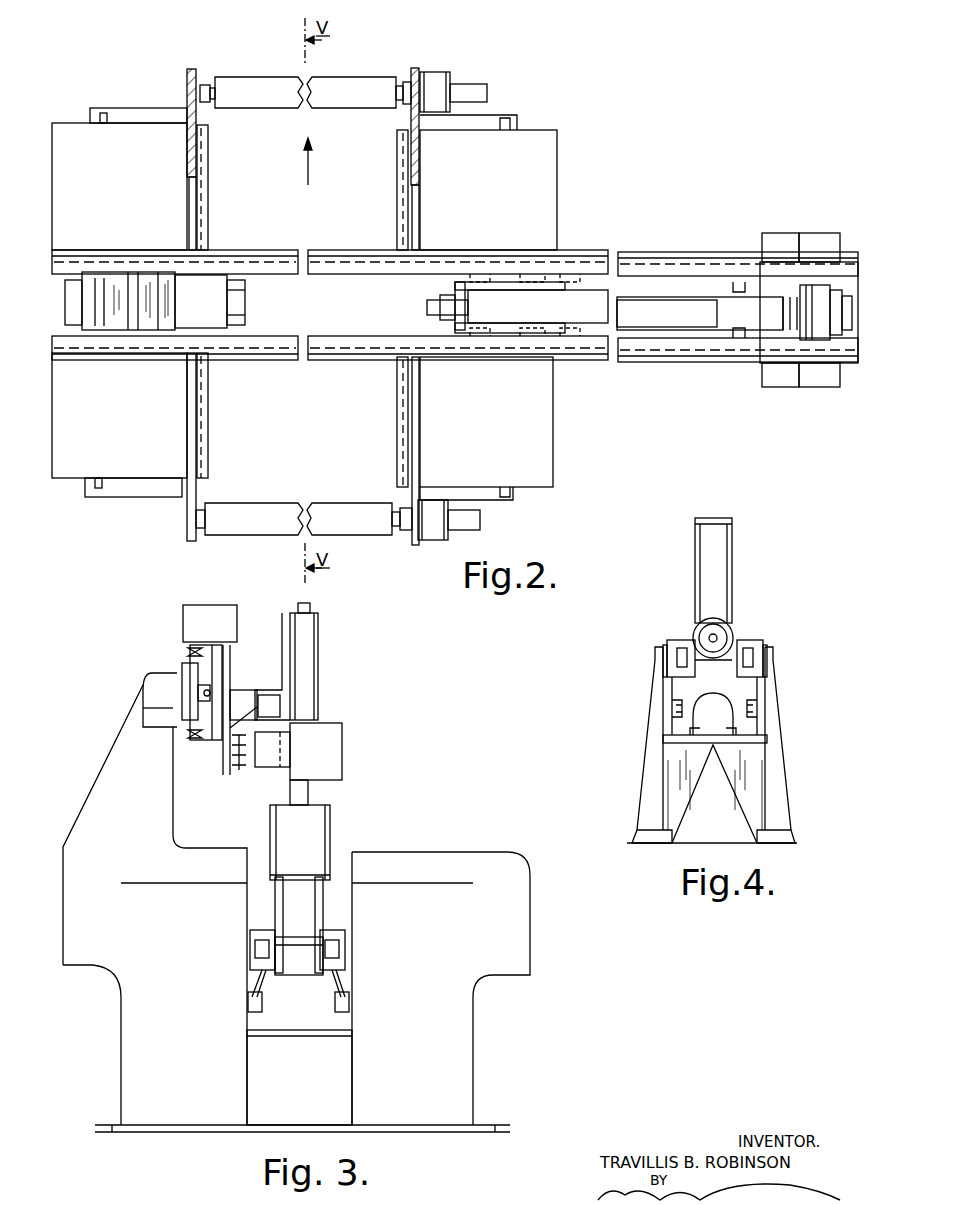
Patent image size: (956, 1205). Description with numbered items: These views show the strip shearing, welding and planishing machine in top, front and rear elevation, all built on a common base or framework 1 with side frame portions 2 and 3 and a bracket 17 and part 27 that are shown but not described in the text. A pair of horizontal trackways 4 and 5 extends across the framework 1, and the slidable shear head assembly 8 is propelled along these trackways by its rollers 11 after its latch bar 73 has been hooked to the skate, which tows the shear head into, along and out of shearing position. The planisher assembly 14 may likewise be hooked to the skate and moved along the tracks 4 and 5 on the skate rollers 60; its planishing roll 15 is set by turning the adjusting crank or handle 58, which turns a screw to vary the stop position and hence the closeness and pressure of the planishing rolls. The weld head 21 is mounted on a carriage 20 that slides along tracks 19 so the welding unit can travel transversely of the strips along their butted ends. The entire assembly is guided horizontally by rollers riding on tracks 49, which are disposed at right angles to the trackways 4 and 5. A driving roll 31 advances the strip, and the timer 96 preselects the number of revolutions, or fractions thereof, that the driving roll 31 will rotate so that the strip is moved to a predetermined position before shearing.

In FIG. 2, the base or framework 1 is at (77, 490).
In FIG. 3, the base or framework 1 is at (118, 1044).
In FIG. 4, the base or framework 1 is at (780, 732).
In FIG. 2, the frame side member 2 is at (552, 462).
In FIG. 3, the frame side member 2 is at (476, 1071).
In FIG. 3, the base housing 3 is at (288, 1037).
In FIG. 2, the horizontal trackway 4 is at (333, 264).
In FIG. 3, the horizontal trackway 4 is at (262, 930).
In FIG. 4, the horizontal trackway 4 is at (667, 662).
In FIG. 2, the horizontal trackway 5 is at (345, 345).
In FIG. 3, the horizontal trackway 5 is at (337, 930).
In FIG. 4, the horizontal trackway 5 is at (757, 665).
In FIG. 2, the shear head assembly 8 is at (138, 248).
In FIG. 3, the shear head assembly 8 is at (340, 827).
In FIG. 3, the rollers 11 is at (258, 948).
In FIG. 2, the planisher assembly 14 is at (659, 252).
In FIG. 4, the planisher assembly 14 is at (740, 550).
In FIG. 2, the planishing roll 15 is at (427, 306).
In FIG. 3, the support bracket 17 is at (100, 758).
In FIG. 3, the tracks 19 is at (188, 651).
In FIG. 3, the carriage 20 is at (225, 675).
In FIG. 3, the weld head 21 is at (255, 630).
In FIG. 2, the lower roller 27 is at (350, 503).
In FIG. 2, the driving roll 31 is at (342, 75).
In FIG. 2, the tracks 49 is at (208, 395).
In FIG. 2, the adjusting crank or handle 58 is at (825, 300).
In FIG. 4, the adjusting crank or handle 58 is at (735, 630).
In FIG. 4, the rollers 60 is at (677, 655).
In FIG. 2, the latch bar 73 is at (245, 302).
In FIG. 2, the timer 96 is at (443, 75).